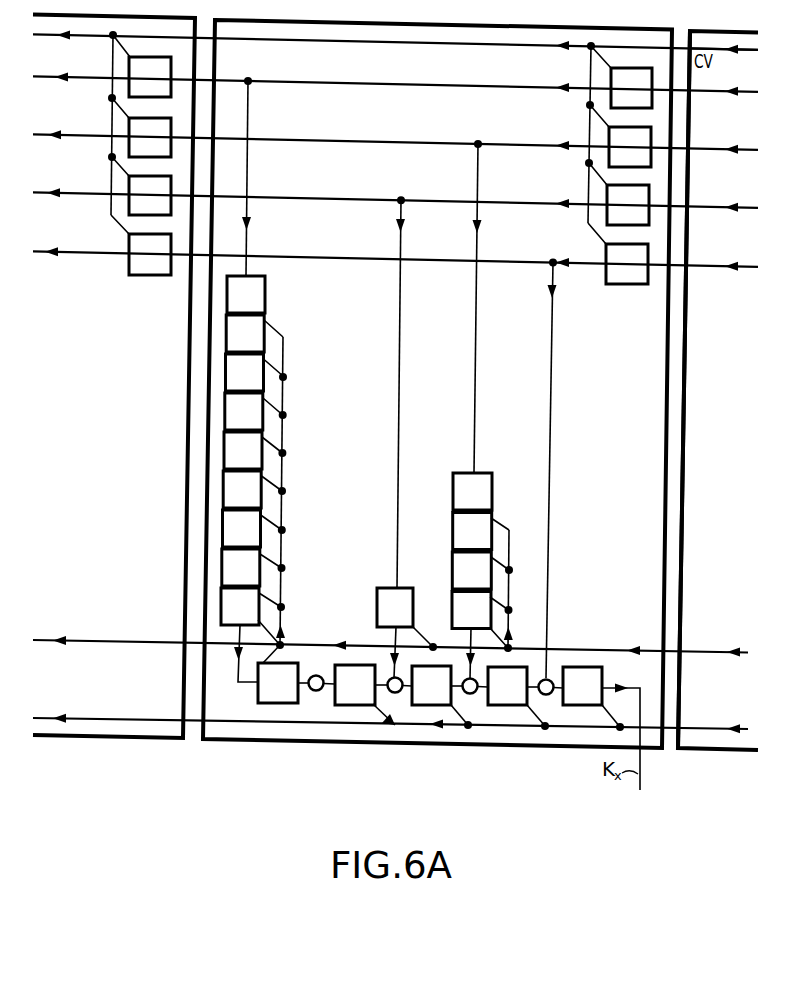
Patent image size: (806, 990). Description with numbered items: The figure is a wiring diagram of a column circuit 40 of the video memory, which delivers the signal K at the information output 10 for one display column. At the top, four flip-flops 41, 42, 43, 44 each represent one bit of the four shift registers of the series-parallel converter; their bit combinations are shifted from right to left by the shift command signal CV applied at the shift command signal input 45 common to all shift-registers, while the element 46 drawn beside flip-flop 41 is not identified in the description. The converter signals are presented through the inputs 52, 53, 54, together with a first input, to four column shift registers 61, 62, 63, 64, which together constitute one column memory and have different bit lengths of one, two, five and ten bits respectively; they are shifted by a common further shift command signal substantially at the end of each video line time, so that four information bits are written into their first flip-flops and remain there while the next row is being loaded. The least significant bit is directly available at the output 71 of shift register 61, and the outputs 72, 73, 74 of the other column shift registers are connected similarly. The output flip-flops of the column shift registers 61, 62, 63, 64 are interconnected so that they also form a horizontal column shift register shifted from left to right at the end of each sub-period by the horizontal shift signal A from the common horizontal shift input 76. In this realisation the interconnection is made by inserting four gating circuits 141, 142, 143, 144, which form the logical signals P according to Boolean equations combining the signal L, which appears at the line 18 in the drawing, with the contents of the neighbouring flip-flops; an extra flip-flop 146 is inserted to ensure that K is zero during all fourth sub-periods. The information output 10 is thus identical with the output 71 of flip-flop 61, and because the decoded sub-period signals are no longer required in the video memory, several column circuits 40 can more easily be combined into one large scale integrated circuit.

The information output 10 is at (641, 757).
The L bus line 18 is at (704, 656).
The column circuit 40 is at (561, 740).
The flip-flop 41 is at (603, 243).
The flip-flop 42 is at (607, 200).
The flip-flop 43 is at (609, 140).
The flip-flop 44 is at (611, 78).
The shift command signal input 45 is at (742, 51).
The converter block 46 is at (606, 246).
The input of column shift register 52 is at (398, 588).
The input of column shift register 53 is at (475, 473).
The input of column shift register 54 is at (246, 276).
The column shift register 61 is at (595, 667).
The column shift register 62 is at (377, 598).
The column shift register 63 is at (453, 530).
The column shift register 64 is at (265, 418).
The output of shift register 71 is at (605, 688).
The output of column shift register 72 is at (460, 682).
The output of column shift register 73 is at (537, 678).
The output of column shift register 74 is at (303, 682).
The common horizontal shift input 76 is at (701, 731).
The gating circuit 141 is at (552, 678).
The gating circuit 142 is at (398, 692).
The gating circuit 143 is at (476, 694).
The gating circuit 144 is at (311, 677).
The extra flip-flop 146 is at (352, 665).